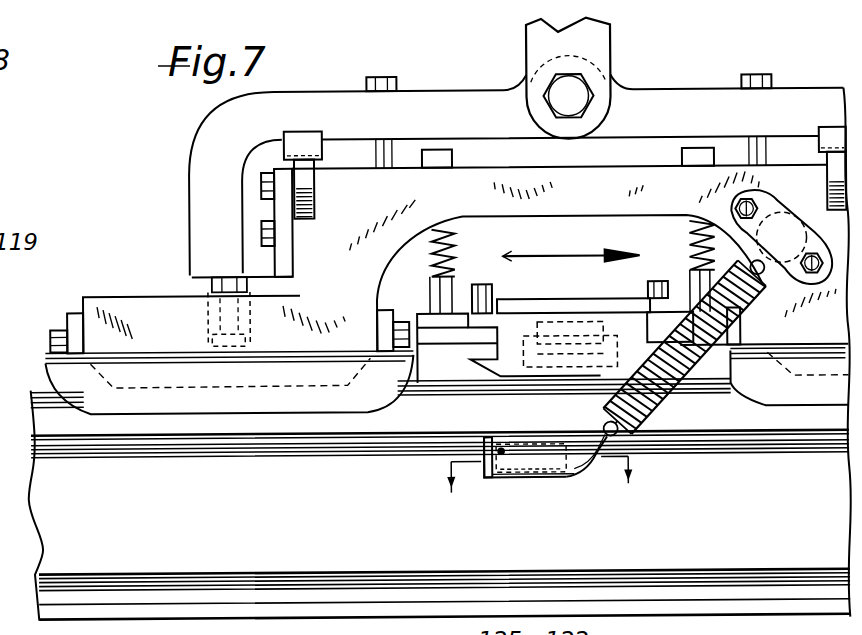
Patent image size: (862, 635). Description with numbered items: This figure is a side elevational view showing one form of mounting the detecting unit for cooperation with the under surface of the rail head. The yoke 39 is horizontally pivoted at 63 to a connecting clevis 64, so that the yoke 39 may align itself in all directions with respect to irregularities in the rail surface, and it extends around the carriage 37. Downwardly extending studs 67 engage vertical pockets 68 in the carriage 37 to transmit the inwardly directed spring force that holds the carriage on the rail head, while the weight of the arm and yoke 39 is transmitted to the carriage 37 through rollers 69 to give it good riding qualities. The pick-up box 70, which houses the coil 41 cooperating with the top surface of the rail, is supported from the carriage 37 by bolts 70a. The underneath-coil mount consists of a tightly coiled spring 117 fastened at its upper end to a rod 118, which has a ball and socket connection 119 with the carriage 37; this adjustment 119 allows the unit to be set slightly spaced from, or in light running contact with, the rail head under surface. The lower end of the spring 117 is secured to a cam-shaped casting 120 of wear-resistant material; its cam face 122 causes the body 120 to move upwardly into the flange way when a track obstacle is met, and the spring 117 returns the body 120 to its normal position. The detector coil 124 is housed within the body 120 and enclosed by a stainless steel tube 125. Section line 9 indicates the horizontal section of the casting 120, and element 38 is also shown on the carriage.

The section line 9- 9 is at (540, 474).
The carriage 37 is at (125, 300).
The carriage base skirt 38 is at (95, 400).
The yoke 39 is at (343, 105).
The coil 41 is at (562, 325).
The horizontal pivot 63 is at (578, 96).
The connecting clevis 64 is at (540, 44).
The studs 67 is at (222, 314).
The vertical pockets 68 is at (207, 331).
The rollers 69 is at (316, 207).
The pick-up box 70 is at (622, 322).
The bolts 70a is at (690, 240).
The coiled spring 117 is at (657, 394).
The rod 118 is at (766, 272).
The ball and socket connection 119 is at (788, 224).
The cam-shaped casting 120 is at (562, 482).
The cam face 122 is at (600, 458).
The detector coil 124 is at (530, 477).
The stainless steel tube 125 is at (483, 483).